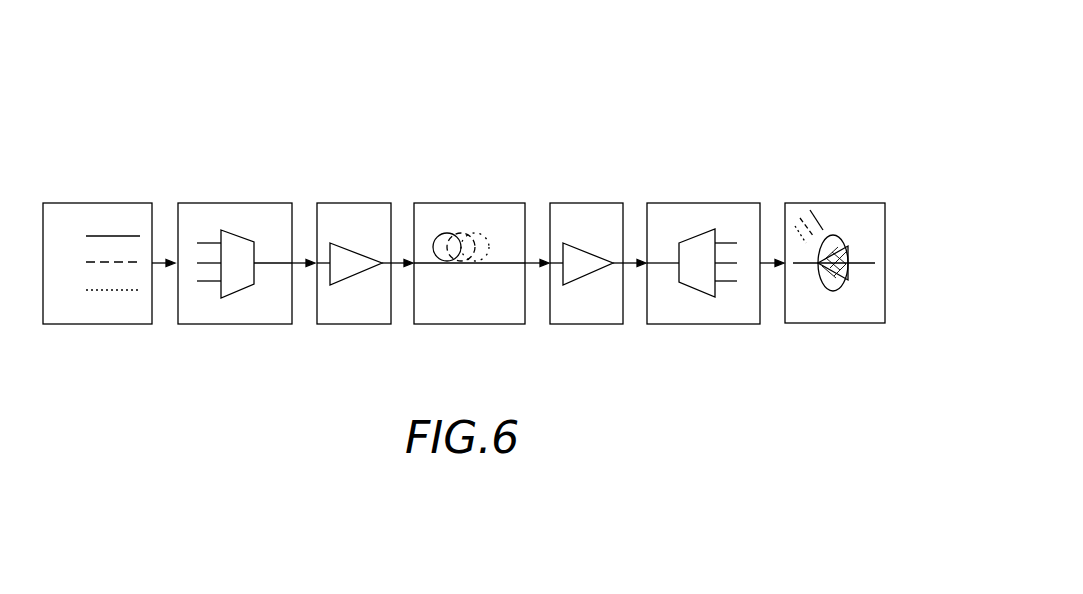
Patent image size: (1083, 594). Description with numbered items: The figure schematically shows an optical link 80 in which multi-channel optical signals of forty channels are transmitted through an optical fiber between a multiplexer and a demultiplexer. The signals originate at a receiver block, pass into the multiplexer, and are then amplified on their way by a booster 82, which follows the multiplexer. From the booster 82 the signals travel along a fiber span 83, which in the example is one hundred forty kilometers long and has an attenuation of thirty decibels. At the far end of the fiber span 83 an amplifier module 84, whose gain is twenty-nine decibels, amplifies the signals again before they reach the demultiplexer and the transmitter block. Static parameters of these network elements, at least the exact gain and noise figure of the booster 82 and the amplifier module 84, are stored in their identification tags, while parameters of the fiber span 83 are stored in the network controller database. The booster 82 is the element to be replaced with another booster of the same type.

The optical link 80 is at (796, 67).
The booster 82 is at (355, 202).
The fiber span 83 is at (470, 202).
The amplifier module 84 is at (587, 202).